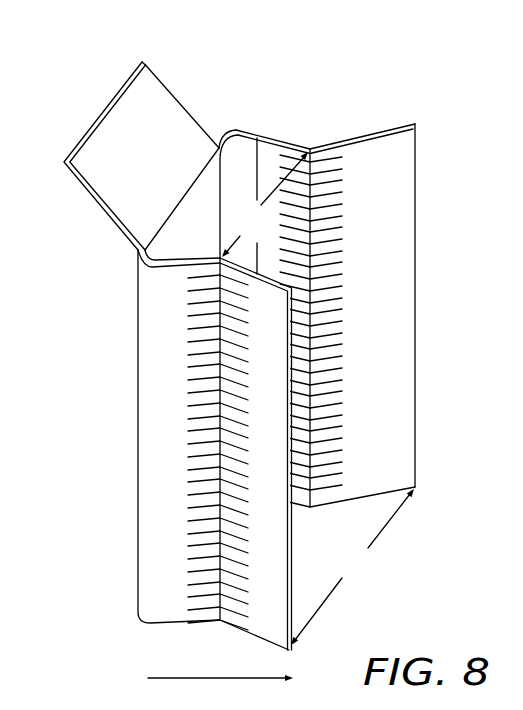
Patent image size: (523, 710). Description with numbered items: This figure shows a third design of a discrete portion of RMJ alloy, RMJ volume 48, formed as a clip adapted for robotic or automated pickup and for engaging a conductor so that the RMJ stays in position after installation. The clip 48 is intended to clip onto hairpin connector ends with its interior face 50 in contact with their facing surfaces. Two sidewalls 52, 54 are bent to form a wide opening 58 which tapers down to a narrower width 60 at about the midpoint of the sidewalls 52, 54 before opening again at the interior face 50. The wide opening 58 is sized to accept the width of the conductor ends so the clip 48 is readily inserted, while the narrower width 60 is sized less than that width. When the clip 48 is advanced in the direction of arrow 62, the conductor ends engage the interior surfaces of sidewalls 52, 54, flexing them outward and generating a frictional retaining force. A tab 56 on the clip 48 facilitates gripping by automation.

The RMJ volume 48 is at (420, 211).
The interior face 50 is at (207, 185).
The sidewall 52 is at (373, 132).
The sidewall 54 is at (148, 310).
The tab 56 is at (125, 140).
The wide opening 58 is at (370, 575).
The narrower width 60 is at (259, 231).
The arrow 62 is at (234, 673).